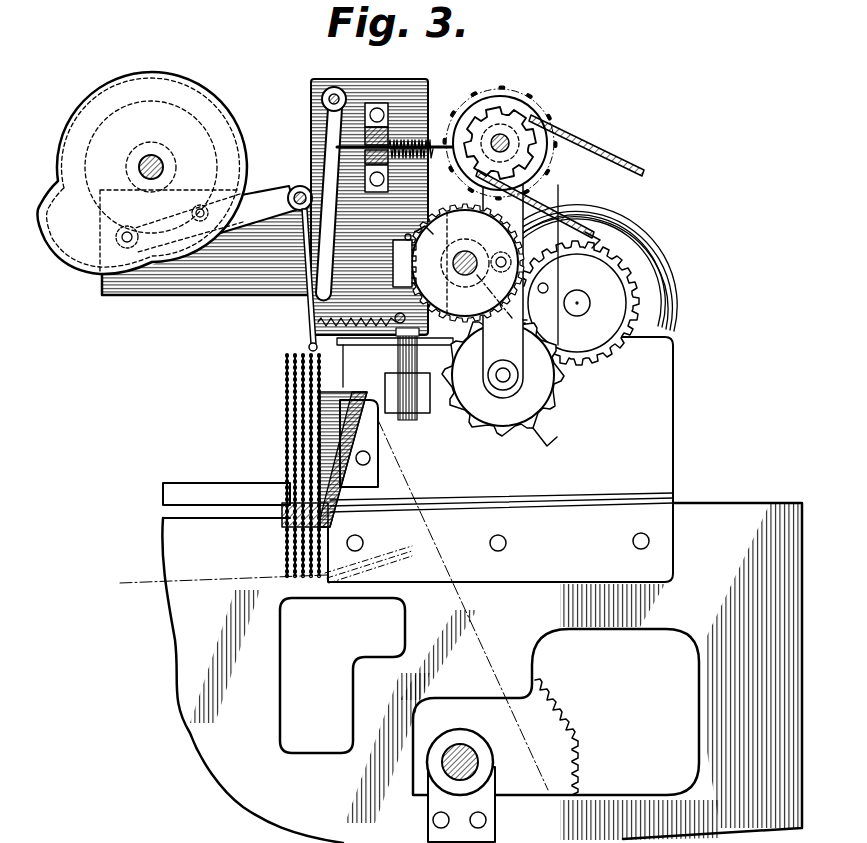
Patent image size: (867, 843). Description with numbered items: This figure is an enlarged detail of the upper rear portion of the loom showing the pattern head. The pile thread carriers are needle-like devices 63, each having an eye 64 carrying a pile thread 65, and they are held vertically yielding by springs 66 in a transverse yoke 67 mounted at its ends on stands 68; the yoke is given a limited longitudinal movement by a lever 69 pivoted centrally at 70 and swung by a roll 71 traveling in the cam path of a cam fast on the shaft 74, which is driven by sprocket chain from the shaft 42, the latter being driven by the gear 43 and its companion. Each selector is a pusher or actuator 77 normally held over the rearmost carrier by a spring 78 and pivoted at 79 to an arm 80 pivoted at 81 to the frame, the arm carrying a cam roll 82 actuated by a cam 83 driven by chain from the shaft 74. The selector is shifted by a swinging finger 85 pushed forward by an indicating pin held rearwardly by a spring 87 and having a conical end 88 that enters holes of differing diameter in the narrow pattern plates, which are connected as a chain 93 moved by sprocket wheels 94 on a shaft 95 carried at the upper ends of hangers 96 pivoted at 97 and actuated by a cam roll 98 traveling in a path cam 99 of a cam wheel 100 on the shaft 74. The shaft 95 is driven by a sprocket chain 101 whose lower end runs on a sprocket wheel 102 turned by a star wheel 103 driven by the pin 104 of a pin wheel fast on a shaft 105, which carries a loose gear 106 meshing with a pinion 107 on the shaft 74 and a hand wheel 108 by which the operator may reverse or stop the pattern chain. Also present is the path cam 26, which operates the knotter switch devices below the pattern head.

The path cam 26 is at (345, 135).
The shaft 42 is at (480, 765).
The gear 43 is at (580, 740).
The needle-like pile thread carrier 63 is at (290, 548).
The eye 64 is at (304, 582).
The pile thread 65 is at (264, 533).
The spring 66 is at (290, 405).
The transverse yoke 67 is at (283, 522).
The stand 68 is at (380, 465).
The lever 69 is at (309, 346).
The pivot 70 is at (396, 365).
The roll 71 is at (486, 320).
The shaft 74 is at (420, 234).
The pusher or actuator (selector) 77 is at (303, 312).
The spring 78 is at (357, 321).
The pivot 79 is at (297, 188).
The arm 80 is at (255, 210).
The pivot 81 is at (122, 244).
The cam roll 82 is at (193, 212).
The cam 83 is at (68, 258).
The swinging finger 85 is at (312, 133).
The spring 87 is at (420, 143).
The conical end 88 is at (463, 100).
The chain 93 is at (592, 145).
The sprocket wheel 94 is at (548, 140).
The shaft 95 is at (505, 139).
The hanger 96 is at (505, 207).
The pivot 97 is at (498, 382).
The cam roll 98 is at (502, 271).
The path cam 99 is at (498, 232).
The cam wheel 100 is at (393, 264).
The sprocket chain 101 is at (583, 241).
The sprocket wheel 102 is at (567, 392).
The star wheel 103 is at (545, 442).
The pin 104 is at (549, 290).
The shaft 105 is at (586, 305).
The loose gear 106 is at (622, 263).
The pinion 107 is at (405, 238).
The hand wheel 108 is at (665, 332).